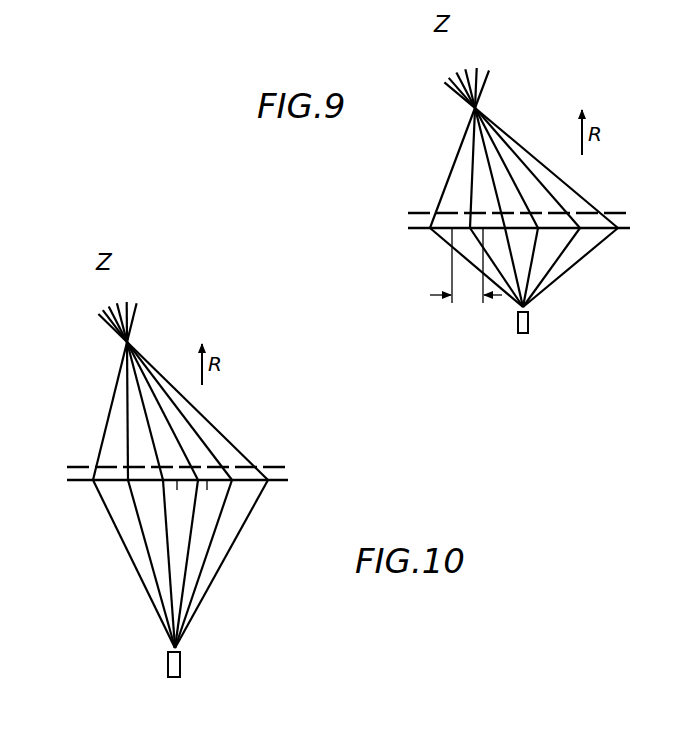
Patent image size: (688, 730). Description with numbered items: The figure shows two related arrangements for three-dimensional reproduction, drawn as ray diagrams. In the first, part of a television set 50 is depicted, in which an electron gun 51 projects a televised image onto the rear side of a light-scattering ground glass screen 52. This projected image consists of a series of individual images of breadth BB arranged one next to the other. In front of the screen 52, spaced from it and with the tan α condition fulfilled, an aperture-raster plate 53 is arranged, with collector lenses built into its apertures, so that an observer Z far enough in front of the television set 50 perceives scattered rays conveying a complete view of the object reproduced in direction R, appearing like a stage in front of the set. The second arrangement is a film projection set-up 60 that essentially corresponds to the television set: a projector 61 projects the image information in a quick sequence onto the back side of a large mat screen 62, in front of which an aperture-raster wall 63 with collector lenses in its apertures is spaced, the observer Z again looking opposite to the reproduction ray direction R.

In FIG. 9, the television set 50 is at (404, 249).
In FIG. 9, the electron gun 51 is at (529, 322).
In FIG. 9, the light-scattering ground glass screen 52 is at (620, 232).
In FIG. 9, the aperture-raster plate 53 is at (617, 213).
In FIG. 10, the film projection set-up 60 is at (74, 554).
In FIG. 10, the projector 61 is at (180, 667).
In FIG. 10, the mat screen 62 is at (273, 485).
In FIG. 10, the aperture-raster wall 63 is at (277, 468).